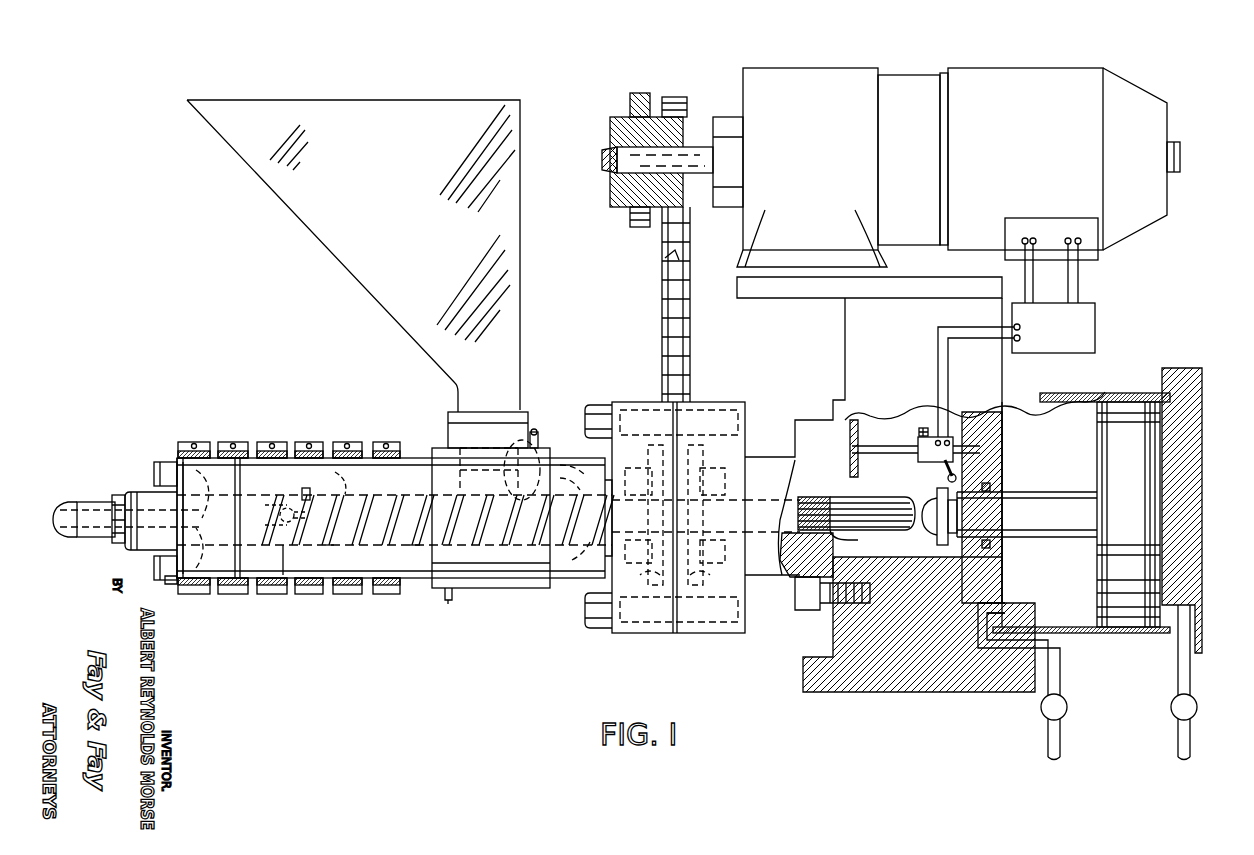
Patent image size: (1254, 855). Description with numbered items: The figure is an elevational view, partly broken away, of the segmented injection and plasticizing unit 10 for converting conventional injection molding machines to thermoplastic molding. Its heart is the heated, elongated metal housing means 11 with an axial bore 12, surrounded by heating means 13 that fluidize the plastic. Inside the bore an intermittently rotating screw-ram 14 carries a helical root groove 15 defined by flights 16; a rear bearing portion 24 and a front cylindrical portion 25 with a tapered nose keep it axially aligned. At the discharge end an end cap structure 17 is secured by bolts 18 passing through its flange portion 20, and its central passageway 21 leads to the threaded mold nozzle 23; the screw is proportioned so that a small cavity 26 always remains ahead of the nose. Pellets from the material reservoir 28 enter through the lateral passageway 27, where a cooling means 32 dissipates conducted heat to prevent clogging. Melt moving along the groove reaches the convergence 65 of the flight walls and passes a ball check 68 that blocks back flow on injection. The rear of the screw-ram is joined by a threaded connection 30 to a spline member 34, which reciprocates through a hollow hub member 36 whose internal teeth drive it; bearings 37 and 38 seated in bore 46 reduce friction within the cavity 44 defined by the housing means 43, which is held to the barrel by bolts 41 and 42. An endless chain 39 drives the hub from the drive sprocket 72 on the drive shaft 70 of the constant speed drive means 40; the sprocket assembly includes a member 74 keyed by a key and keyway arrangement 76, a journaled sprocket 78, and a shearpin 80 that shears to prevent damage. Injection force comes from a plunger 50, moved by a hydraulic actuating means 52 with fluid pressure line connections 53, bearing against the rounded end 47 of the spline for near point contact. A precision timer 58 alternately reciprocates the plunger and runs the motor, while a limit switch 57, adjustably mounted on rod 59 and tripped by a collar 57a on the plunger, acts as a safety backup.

The segmented injection and plasticizing unit 10 is at (394, 474).
The housing means 11 is at (410, 470).
The axial bore 12 is at (252, 580).
The heating means 13 is at (216, 446).
The screw-ram 14 is at (419, 548).
The helical root groove 15 is at (328, 555).
The flights 16 is at (330, 470).
The end cap structure 17 is at (138, 486).
The bolts 18 is at (160, 462).
The flange portion 20 is at (212, 578).
The central passageway 21 is at (195, 478).
The mold nozzle 23 is at (96, 502).
The bearing portion 24 is at (576, 564).
The cylindrical portion 25 is at (284, 580).
The cavity 26 is at (168, 582).
The lateral passageway 27 is at (518, 426).
The material reservoir 28 is at (520, 288).
The threaded connection 30 is at (566, 472).
The cooling means 32 is at (489, 588).
The spline member 34 is at (822, 498).
The hub member 36 is at (714, 568).
The bearing 37 is at (640, 572).
The bearing 38 is at (734, 584).
The endless chain 39 is at (690, 355).
The constant speed drive means 40 is at (1030, 82).
The bolt 41 is at (596, 404).
The bolt 42 is at (590, 628).
The housing means 43 is at (716, 396).
The cavity 44 is at (676, 590).
The bore 46 is at (835, 531).
The rounded end 47 is at (916, 478).
The plunger 50 is at (1055, 490).
The actuating means 52 is at (1124, 632).
The fluid pressure line connections 53 is at (1174, 686).
The limit switch 57 is at (918, 436).
The collar 57a is at (957, 497).
The timer 58 is at (1095, 340).
The rod 59 is at (848, 422).
The convergence 65 is at (304, 486).
The ball check 68 is at (289, 506).
The drive shaft 70 is at (698, 148).
The drive sprocket 72 is at (626, 94).
The member 74 is at (610, 122).
The key and keyway arrangement 76 is at (604, 154).
The sprocket 78 is at (675, 96).
The shearpin 80 is at (628, 216).